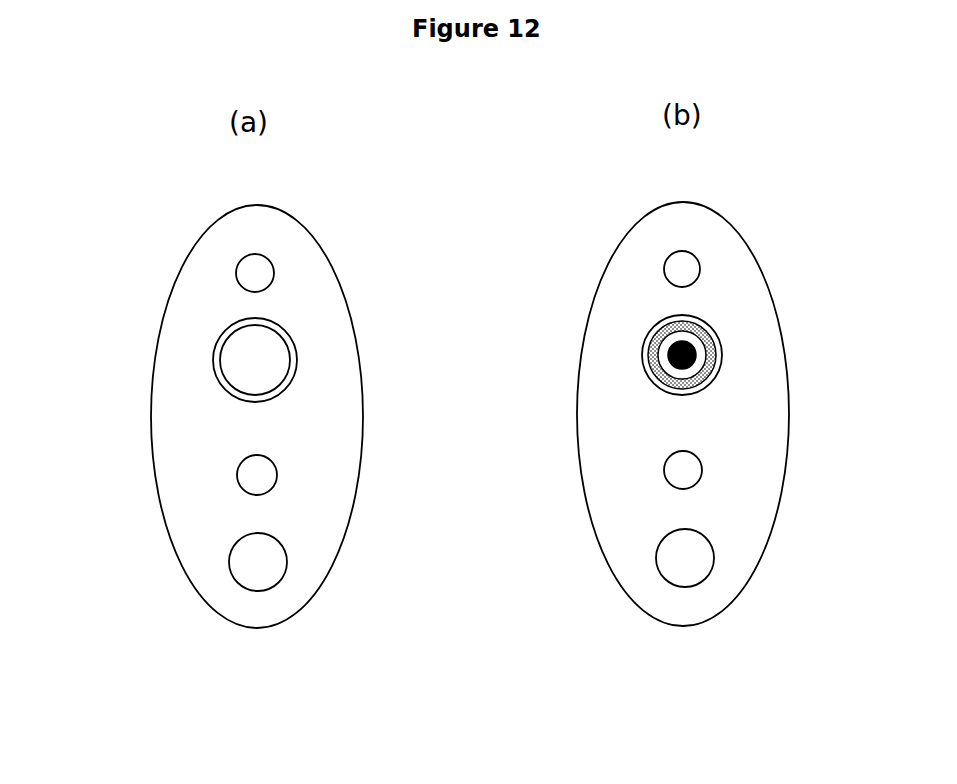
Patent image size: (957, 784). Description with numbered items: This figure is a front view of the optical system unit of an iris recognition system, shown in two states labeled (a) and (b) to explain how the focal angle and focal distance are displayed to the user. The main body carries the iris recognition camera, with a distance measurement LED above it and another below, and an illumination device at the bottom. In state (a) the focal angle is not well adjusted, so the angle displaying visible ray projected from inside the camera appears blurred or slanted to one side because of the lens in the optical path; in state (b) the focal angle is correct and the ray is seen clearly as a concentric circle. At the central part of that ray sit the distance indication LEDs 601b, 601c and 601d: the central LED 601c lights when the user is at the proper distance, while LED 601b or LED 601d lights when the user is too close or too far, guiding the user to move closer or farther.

The distance indication LED 601b is at (688, 350).
The central LED 601c is at (698, 354).
The distance indication LED 601d is at (710, 386).